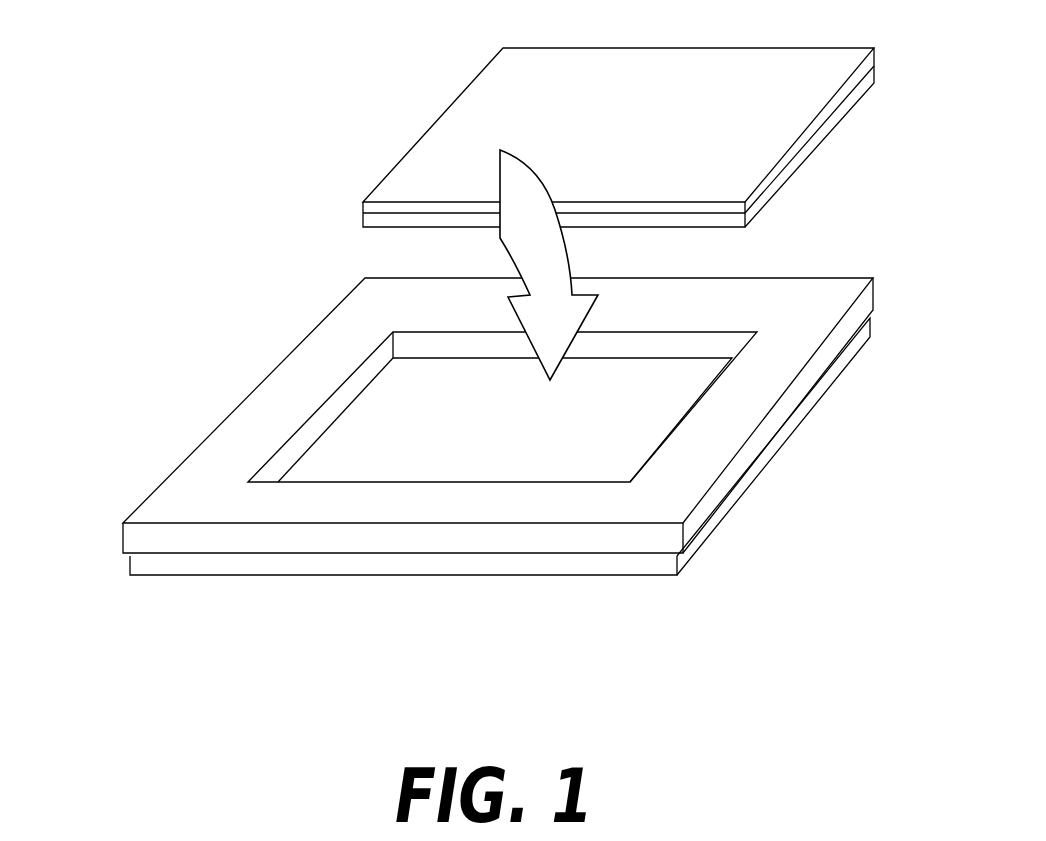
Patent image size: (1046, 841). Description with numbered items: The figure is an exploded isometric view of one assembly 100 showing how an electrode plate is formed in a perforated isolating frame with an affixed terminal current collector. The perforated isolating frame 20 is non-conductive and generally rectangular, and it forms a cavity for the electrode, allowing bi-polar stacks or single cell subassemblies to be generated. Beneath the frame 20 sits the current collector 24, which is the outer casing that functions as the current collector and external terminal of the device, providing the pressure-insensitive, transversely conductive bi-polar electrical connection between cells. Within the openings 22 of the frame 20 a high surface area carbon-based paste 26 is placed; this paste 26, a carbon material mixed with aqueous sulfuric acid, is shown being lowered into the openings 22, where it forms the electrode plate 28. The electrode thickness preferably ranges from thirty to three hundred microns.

The assembly 100 is at (188, 312).
The perforated isolating frame 20 is at (443, 508).
The openings 22 is at (525, 423).
The current collector 24 is at (416, 576).
The carbon-based paste 26 is at (619, 114).
The electrode plate 28 is at (446, 110).